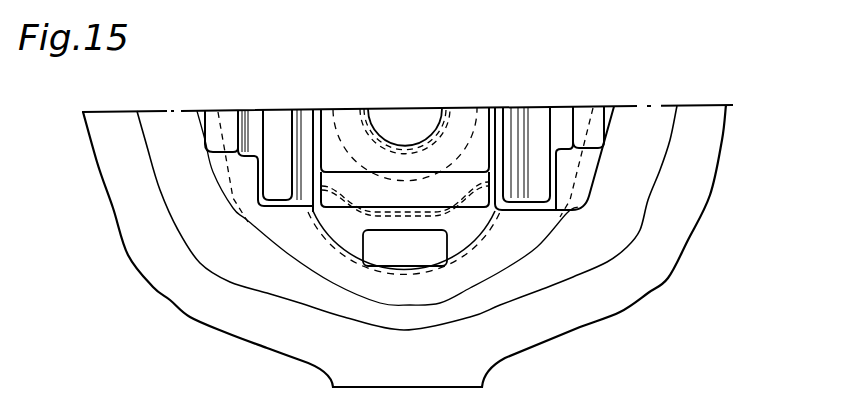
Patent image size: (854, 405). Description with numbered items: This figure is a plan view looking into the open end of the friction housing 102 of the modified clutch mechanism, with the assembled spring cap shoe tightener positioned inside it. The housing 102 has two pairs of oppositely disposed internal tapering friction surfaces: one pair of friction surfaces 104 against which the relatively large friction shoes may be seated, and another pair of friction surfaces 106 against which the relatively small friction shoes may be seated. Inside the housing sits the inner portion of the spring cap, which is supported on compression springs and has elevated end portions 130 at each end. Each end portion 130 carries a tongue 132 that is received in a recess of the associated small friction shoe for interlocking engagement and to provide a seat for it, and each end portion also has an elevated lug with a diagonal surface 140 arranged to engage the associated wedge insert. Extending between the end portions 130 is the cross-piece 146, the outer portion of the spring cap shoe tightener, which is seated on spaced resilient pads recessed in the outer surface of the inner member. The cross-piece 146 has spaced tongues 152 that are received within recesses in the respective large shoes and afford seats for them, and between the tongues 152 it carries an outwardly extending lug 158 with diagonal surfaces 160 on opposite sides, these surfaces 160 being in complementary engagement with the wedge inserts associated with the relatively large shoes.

The housing 102 is at (689, 238).
The internal tapering friction surface 104 is at (357, 325).
The internal tapering friction surface 106 is at (142, 143).
The elevated end portion 130 is at (235, 197).
The tongue 132 is at (223, 122).
The diagonal surface 140 is at (275, 122).
The cross-piece 146 is at (451, 245).
The tongue 152 is at (372, 250).
The lug 158 is at (457, 118).
The diagonal surface 160 is at (357, 183).